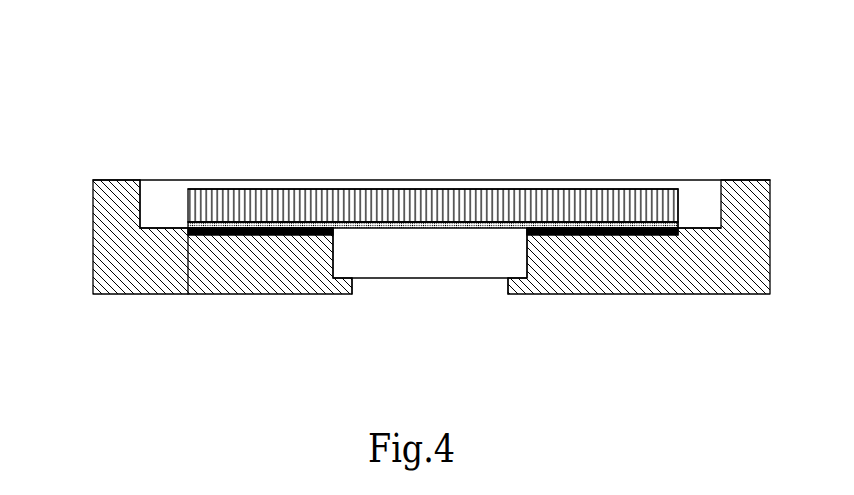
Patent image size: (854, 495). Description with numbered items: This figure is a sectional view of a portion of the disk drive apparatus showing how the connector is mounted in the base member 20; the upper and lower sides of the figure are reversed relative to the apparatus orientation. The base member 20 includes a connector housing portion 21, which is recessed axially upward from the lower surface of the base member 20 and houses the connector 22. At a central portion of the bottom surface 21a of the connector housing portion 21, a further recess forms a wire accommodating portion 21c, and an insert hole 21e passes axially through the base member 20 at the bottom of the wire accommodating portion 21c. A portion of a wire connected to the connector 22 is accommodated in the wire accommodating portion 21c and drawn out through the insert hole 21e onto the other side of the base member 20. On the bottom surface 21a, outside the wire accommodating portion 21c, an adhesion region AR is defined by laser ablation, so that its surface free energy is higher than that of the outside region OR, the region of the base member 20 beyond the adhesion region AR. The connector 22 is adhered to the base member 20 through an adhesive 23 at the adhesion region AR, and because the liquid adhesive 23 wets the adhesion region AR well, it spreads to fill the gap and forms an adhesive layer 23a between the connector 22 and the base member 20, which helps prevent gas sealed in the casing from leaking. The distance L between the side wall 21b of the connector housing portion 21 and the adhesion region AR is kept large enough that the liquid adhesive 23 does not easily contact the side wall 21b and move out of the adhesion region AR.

The base member 20 is at (660, 283).
The connector housing portion 21 is at (172, 186).
The bottom surface 21a is at (253, 220).
The side wall 21b is at (168, 198).
The wire accommodating portion 21c is at (373, 238).
The insert hole 21e is at (442, 283).
The connector 22 is at (407, 192).
The adhesive 23 is at (177, 227).
The adhesive layer 23a is at (295, 224).
The outside region OR is at (157, 224).
The adhesion region AR is at (275, 236).
The distance L is at (140, 294).